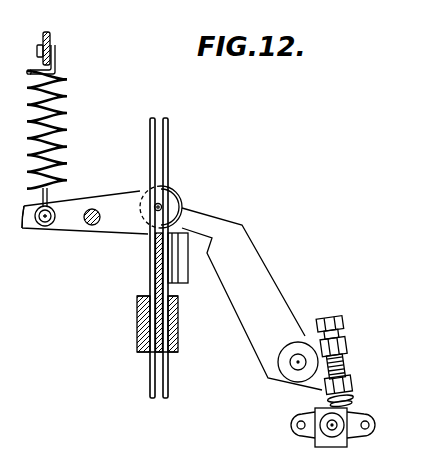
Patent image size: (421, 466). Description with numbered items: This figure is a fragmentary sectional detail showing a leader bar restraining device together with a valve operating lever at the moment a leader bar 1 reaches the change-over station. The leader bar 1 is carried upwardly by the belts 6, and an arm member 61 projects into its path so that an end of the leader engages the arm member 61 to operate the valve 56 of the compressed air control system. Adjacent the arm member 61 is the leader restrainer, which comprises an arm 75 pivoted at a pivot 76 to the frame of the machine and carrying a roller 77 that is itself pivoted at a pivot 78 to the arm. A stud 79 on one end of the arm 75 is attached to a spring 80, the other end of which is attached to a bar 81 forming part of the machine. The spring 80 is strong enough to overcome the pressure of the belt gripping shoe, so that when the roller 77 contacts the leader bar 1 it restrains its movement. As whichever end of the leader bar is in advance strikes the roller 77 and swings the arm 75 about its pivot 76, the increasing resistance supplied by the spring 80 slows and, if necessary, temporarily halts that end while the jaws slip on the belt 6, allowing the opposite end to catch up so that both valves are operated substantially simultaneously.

The leader bar 1 is at (188, 288).
The belts 6 is at (149, 388).
The valve 56 is at (346, 413).
The arm member 61 is at (266, 278).
The arm 75 is at (124, 236).
The pivot 76 is at (88, 226).
The roller 77 is at (184, 199).
The pivot 78 is at (161, 204).
The stud 79 is at (44, 227).
The spring 80 is at (68, 134).
The bar 81 is at (53, 44).